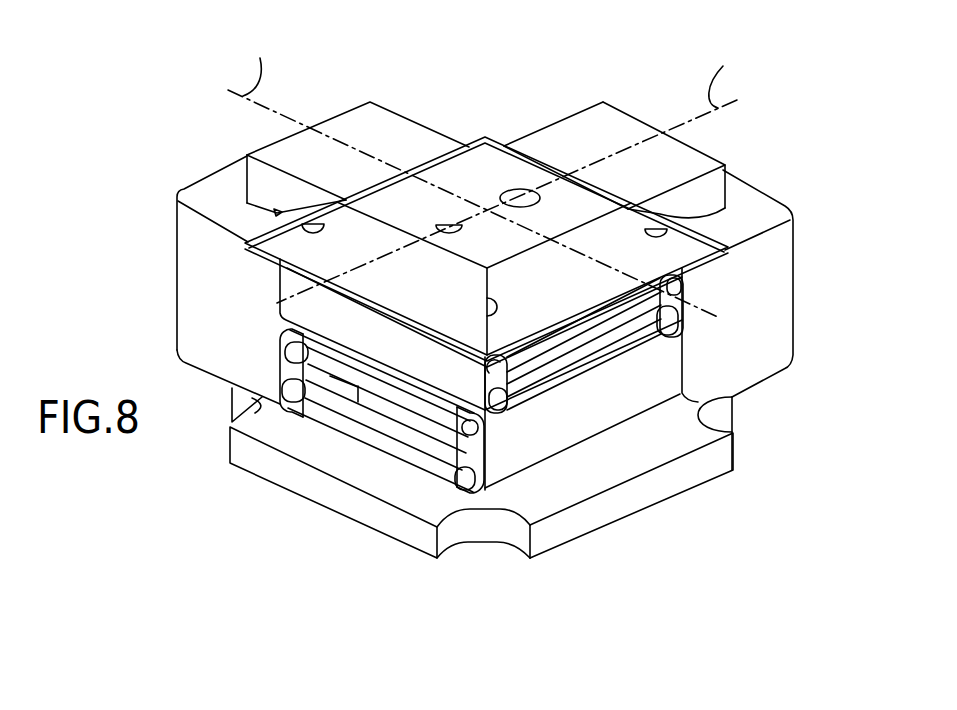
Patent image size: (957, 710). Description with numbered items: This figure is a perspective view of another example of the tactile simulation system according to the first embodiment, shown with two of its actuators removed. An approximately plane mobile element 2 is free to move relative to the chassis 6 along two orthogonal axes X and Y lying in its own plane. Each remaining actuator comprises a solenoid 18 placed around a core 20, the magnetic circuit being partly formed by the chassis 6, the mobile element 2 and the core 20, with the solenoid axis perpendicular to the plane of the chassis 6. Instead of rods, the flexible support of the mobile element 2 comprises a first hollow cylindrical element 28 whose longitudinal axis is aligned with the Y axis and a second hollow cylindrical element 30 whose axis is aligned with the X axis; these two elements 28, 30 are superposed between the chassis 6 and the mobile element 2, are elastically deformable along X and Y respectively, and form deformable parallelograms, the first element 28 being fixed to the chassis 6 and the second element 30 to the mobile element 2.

The mobile element 2 is at (687, 252).
The chassis 6 is at (410, 530).
The solenoid 18 is at (193, 267).
The core 20 is at (293, 152).
The first hollow cylindrical element 28 is at (533, 445).
The second hollow cylindrical element 30 is at (440, 365).